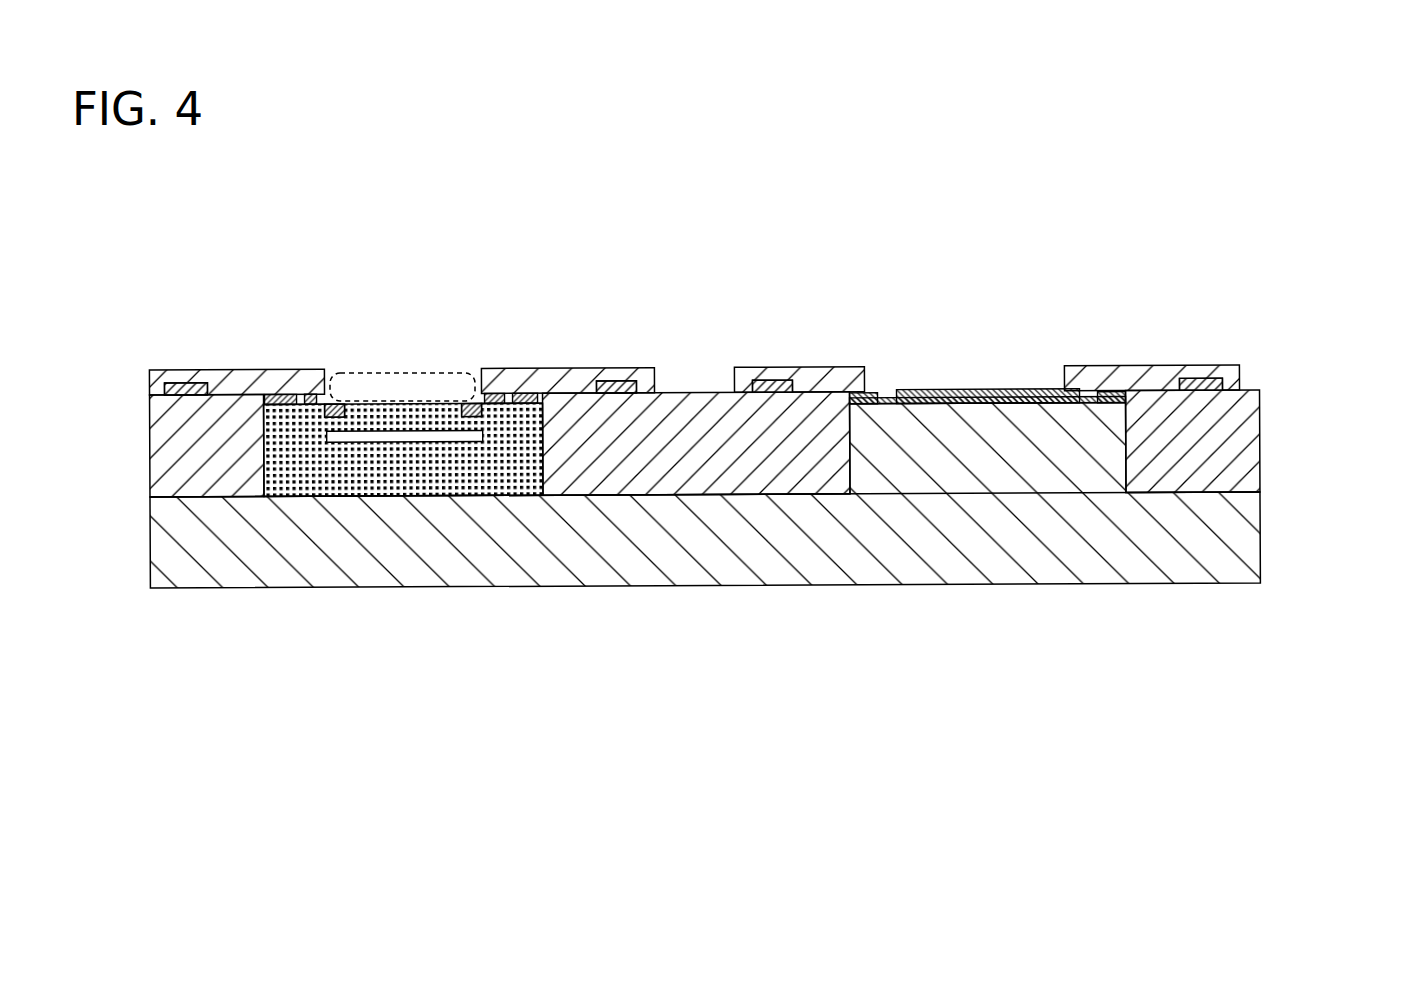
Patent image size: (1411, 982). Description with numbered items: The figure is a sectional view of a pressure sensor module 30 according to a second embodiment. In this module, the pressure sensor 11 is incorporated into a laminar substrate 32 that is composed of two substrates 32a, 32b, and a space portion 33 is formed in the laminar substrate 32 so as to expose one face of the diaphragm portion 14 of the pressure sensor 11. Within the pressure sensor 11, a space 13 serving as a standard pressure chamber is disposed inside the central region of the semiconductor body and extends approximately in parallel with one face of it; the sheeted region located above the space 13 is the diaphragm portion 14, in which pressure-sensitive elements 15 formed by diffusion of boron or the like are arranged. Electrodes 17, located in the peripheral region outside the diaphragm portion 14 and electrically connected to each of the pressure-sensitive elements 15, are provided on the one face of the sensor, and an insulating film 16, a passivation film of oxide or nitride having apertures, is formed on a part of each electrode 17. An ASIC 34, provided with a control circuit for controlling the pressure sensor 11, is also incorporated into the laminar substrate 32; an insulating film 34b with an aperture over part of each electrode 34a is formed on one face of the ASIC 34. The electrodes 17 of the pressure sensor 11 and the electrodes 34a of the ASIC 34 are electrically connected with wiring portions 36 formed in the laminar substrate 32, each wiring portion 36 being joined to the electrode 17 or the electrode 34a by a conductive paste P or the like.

The pressure sensor module 30 is at (1077, 242).
The laminar substrate 32 is at (1360, 423).
The substrate 32a is at (1222, 446).
The substrate 32b is at (1222, 527).
The conductive paste P is at (240, 380).
The wiring portion 36 is at (188, 383).
The ASIC 34 is at (977, 381).
The electrode 34a is at (885, 385).
The insulating film 34b is at (1122, 401).
The space portion 33 is at (402, 371).
The pressure sensor 11 is at (640, 676).
The space 13 is at (385, 440).
The diaphragm portion 14 is at (425, 433).
The pressure-sensitive element 15 is at (335, 418).
The insulating film 16 is at (268, 403).
The electrode 17 is at (298, 404).